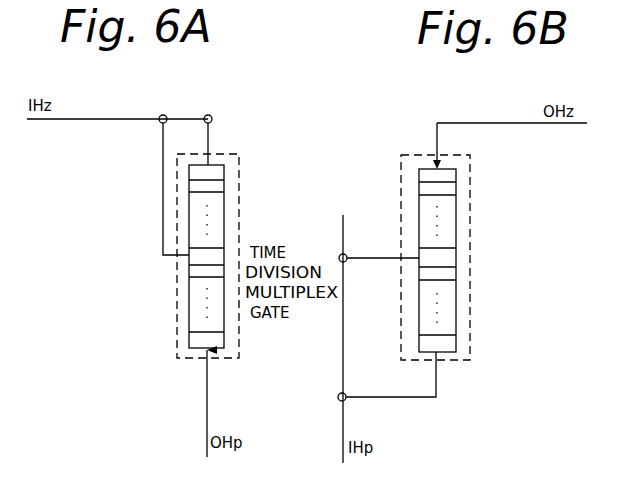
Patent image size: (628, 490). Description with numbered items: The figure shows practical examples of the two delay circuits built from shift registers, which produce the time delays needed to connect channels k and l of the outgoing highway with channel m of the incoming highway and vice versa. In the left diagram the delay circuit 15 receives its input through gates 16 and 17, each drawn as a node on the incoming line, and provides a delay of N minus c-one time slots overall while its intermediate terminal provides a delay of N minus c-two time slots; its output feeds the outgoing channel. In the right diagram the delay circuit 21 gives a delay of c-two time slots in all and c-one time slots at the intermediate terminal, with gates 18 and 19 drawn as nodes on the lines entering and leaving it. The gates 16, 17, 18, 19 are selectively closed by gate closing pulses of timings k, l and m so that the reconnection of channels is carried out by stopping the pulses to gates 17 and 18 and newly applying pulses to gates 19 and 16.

In FIG. 6A, the delay circuit 15 is at (239, 350).
In FIG. 6A, the gate 16 is at (166, 116).
In FIG. 6A, the gate 17 is at (210, 116).
In FIG. 6B, the gate 18 is at (342, 255).
In FIG. 6B, the gate 19 is at (345, 395).
In FIG. 6B, the delay circuit 21 is at (471, 222).